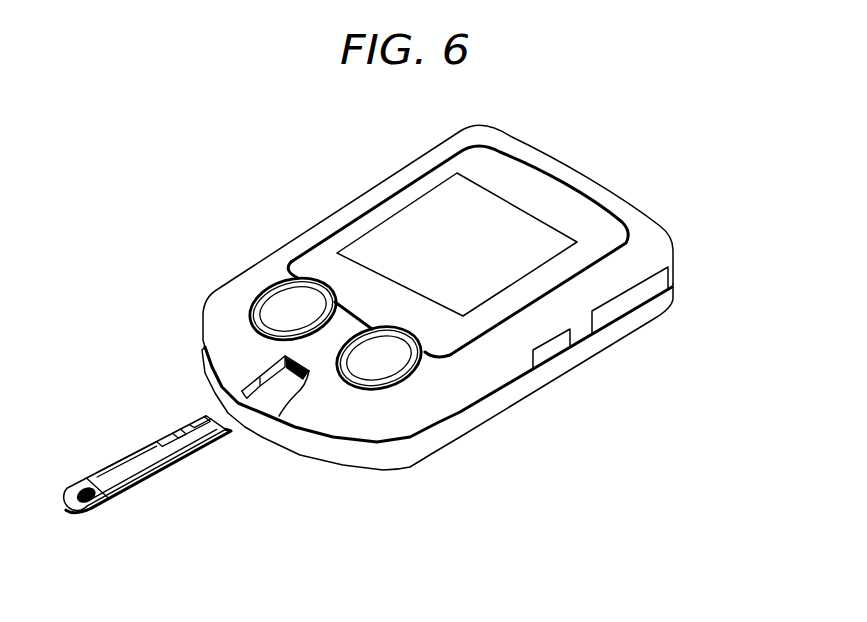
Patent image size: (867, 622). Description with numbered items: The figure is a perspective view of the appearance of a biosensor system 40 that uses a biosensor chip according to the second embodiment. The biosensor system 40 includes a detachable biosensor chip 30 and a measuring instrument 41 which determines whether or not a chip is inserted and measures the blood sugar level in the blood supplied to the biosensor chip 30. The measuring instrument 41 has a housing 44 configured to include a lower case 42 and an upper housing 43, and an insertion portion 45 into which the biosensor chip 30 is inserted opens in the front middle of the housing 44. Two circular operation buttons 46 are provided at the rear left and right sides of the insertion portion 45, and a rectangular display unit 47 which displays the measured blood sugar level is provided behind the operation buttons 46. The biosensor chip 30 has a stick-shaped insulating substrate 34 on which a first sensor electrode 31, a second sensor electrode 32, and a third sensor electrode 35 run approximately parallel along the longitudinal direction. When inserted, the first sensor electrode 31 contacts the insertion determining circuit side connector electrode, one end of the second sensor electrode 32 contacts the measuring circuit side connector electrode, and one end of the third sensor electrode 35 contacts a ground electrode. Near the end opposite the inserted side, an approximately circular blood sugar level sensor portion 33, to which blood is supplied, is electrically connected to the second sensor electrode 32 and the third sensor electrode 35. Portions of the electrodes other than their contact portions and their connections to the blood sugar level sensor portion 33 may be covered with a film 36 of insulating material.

The biosensor chip 30 is at (164, 431).
The first sensor electrode 31 is at (199, 420).
The second sensor electrode 32 is at (213, 436).
The blood sugar level sensor portion 33 is at (77, 486).
The insulating substrate 34 is at (74, 517).
The third sensor electrode 35 is at (218, 433).
The film 36 is at (117, 461).
The biosensor system 40 is at (198, 128).
The measuring instrument 41 is at (614, 185).
The lower case 42 is at (677, 302).
The upper housing 43 is at (676, 260).
The housing 44 is at (738, 267).
The insertion portion 45 is at (241, 392).
The operation buttons 46 is at (373, 368).
The display unit 47 is at (380, 242).